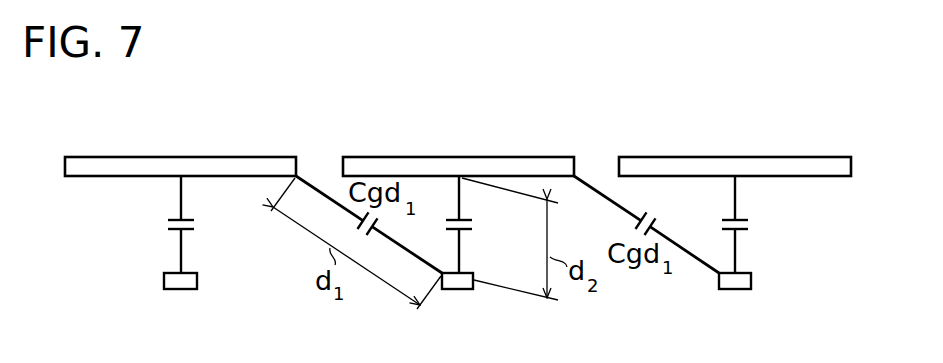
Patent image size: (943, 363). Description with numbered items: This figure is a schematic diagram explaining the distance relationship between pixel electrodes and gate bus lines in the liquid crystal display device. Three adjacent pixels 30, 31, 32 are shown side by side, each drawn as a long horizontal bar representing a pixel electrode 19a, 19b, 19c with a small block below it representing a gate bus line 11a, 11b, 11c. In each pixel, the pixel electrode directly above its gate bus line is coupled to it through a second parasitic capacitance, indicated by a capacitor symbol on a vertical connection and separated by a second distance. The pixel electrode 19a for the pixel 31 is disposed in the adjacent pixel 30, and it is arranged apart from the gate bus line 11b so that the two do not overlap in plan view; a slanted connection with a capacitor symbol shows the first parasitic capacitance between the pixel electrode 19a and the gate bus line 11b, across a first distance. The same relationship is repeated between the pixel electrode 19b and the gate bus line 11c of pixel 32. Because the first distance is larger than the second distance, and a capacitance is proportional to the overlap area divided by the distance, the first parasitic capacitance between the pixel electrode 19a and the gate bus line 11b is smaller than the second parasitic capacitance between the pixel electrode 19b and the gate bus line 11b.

The pixel 30 is at (199, 91).
The pixel 31 is at (476, 91).
The pixel 32 is at (754, 91).
The pixel electrode 19a is at (272, 163).
The pixel electrode 19b is at (547, 163).
The pixel electrode 19c is at (823, 163).
The gate bus line 11a is at (180, 290).
The gate bus line 11b is at (457, 290).
The gate bus line 11c is at (735, 290).